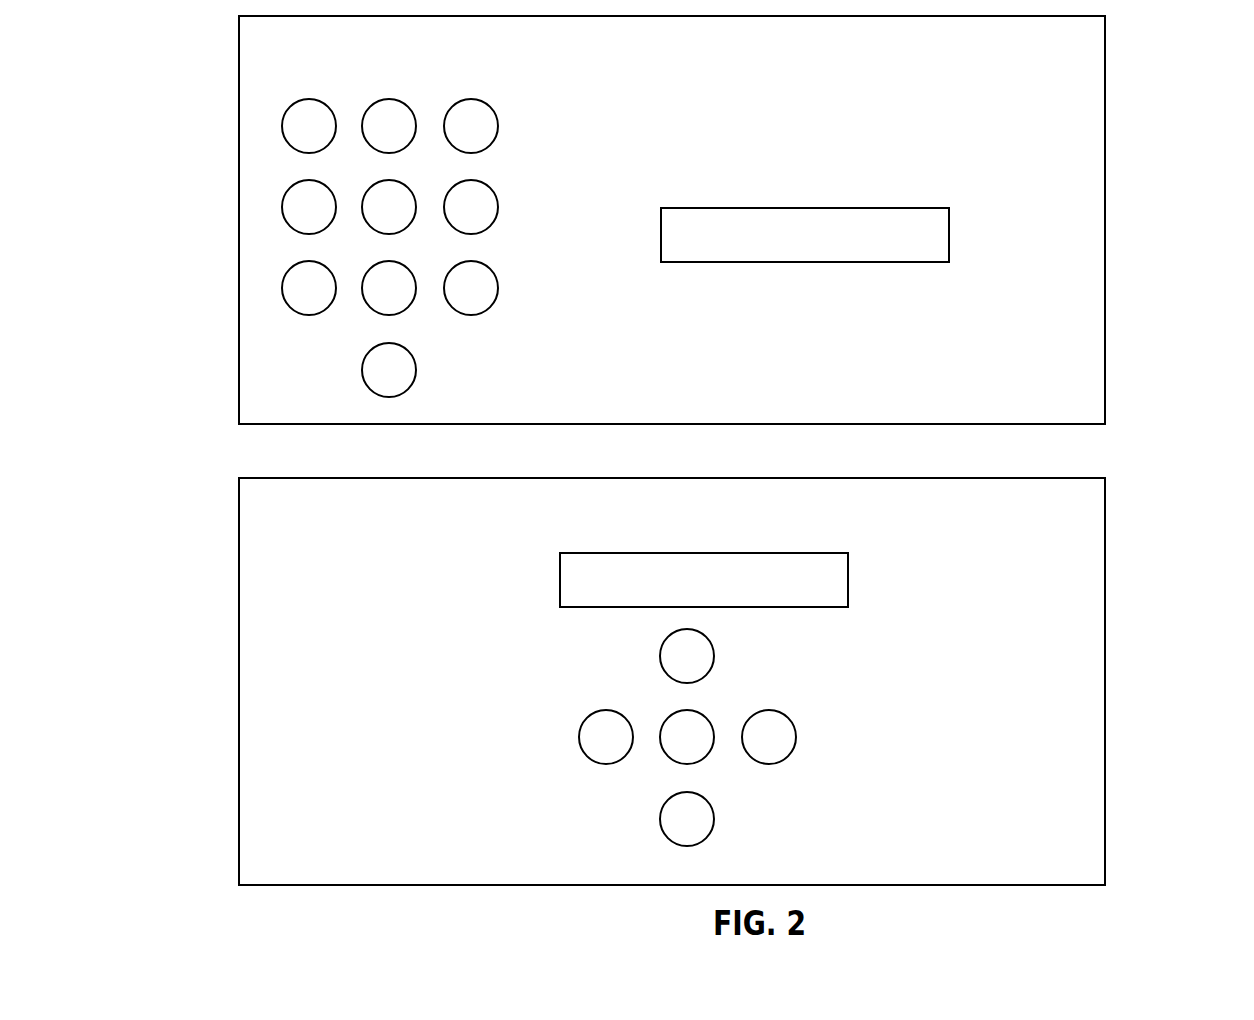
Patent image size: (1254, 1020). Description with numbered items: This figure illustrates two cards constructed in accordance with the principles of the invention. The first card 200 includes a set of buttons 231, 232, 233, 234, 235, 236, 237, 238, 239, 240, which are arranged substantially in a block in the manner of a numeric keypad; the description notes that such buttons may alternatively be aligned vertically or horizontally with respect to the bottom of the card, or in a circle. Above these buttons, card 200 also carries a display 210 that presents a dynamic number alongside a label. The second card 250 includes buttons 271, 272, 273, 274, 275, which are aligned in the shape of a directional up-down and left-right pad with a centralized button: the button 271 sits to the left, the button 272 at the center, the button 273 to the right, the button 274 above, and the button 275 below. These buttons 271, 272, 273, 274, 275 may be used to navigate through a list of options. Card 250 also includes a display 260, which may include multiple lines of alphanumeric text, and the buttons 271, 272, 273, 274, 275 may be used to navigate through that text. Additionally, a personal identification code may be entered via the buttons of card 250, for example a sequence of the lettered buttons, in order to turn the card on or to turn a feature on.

The card 200 is at (1188, 505).
The dynamic number display field 210 is at (668, 226).
The button 231 is at (309, 99).
The button 232 is at (394, 99).
The button 233 is at (471, 99).
The button 234 is at (309, 180).
The button 235 is at (394, 180).
The button 236 is at (471, 180).
The button 237 is at (309, 261).
The button 238 is at (392, 261).
The button 239 is at (471, 261).
The button 240 is at (392, 343).
The card 250 is at (239, 685).
The display 260 is at (565, 572).
The button 271 is at (582, 730).
The button 272 is at (669, 716).
The button 273 is at (750, 716).
The button 274 is at (660, 658).
The button 275 is at (660, 814).